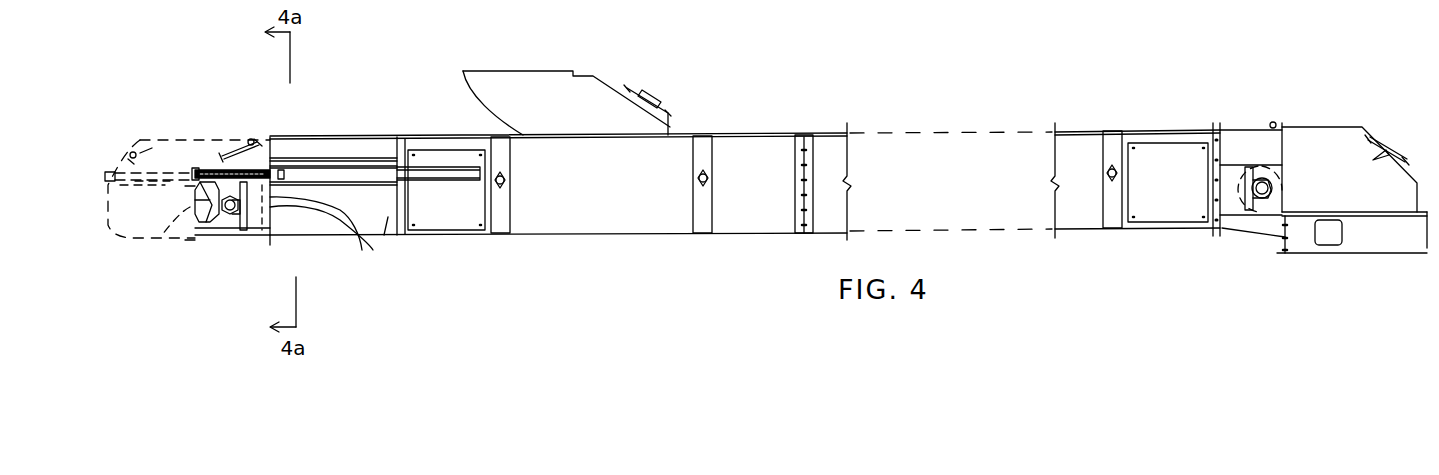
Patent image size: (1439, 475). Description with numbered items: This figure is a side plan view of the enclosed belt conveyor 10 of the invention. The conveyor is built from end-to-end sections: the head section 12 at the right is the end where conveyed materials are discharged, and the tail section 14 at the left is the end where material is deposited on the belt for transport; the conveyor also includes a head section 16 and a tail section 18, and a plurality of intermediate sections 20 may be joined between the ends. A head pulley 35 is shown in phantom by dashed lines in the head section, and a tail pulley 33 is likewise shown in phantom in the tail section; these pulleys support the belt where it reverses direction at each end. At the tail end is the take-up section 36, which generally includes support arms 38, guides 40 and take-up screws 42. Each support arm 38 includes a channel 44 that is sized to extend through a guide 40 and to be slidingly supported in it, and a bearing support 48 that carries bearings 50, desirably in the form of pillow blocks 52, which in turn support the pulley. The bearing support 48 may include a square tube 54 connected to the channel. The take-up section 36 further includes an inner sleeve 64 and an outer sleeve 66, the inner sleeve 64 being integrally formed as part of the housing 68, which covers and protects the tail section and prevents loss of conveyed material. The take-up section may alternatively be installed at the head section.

The enclosed belt conveyor 10 is at (651, 67).
The head section 12 is at (1316, 127).
The tail section 14 is at (323, 137).
The head section 16 is at (1168, 229).
The tail section 18 is at (454, 235).
The intermediate section 20 is at (838, 133).
The tail pulley 33 is at (157, 248).
The head pulley 35 is at (1256, 226).
The take-up section 36 is at (368, 137).
The support arm 38 is at (263, 165).
The guide 40 is at (294, 160).
The take-up screw 42 is at (207, 160).
The channel 44 is at (195, 240).
The bearing support 48 is at (362, 250).
The bearing 50 is at (220, 250).
The pillow block 52 is at (230, 250).
The square tube 54 is at (383, 250).
The inner sleeve 64 is at (258, 168).
The outer sleeve 66 is at (390, 240).
The housing 68 is at (237, 240).